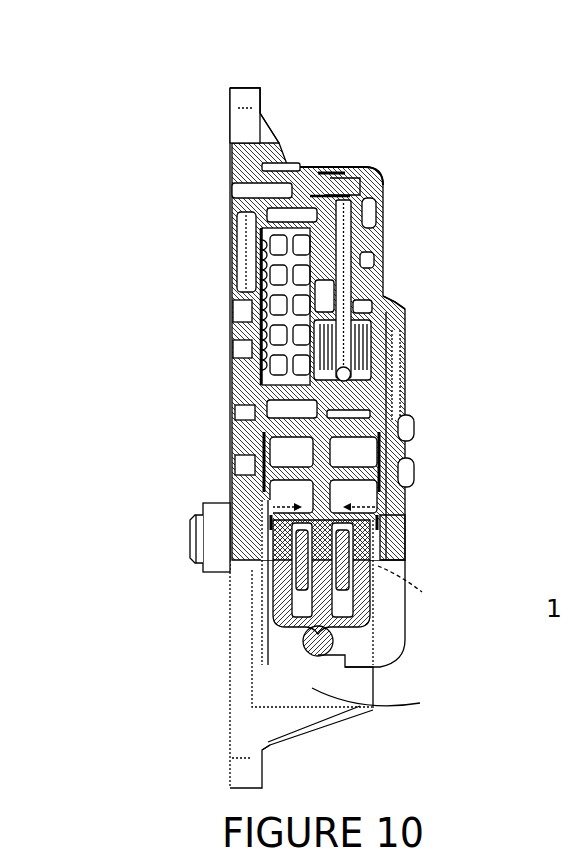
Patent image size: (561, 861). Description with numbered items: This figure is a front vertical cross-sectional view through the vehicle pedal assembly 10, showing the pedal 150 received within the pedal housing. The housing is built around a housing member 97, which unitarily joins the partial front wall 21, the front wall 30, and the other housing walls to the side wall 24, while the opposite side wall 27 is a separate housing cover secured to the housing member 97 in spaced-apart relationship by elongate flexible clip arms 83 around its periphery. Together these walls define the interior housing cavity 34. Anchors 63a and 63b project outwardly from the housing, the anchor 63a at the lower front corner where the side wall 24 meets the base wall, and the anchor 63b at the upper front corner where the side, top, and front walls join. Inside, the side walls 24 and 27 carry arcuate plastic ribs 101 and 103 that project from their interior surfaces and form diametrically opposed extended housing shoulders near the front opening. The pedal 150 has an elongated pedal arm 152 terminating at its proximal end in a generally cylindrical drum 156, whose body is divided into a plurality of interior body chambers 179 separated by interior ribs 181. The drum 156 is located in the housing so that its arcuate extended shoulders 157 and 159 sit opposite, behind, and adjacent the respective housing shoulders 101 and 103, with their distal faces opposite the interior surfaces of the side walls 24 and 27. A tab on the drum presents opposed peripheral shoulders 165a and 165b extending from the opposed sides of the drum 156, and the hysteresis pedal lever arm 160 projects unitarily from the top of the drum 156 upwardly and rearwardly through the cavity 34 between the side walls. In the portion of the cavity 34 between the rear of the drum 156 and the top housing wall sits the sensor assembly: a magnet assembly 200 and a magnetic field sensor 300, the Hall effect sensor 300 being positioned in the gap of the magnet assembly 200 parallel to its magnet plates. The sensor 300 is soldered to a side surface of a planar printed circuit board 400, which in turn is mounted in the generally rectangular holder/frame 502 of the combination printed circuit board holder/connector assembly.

The vehicle pedal assembly 10 is at (474, 184).
The partial front wall 21 is at (373, 703).
The side wall 24 is at (262, 258).
The side wall 27 is at (411, 601).
The front wall 30 is at (305, 165).
The interior housing cavity 34 is at (275, 383).
The anchor 63a is at (228, 760).
The anchor 63b is at (245, 80).
The clip arms 83 is at (333, 180).
The housing member 97 is at (321, 735).
The arcuate wall 101 is at (260, 531).
The arcuate wall 103 is at (382, 532).
The pedal 150 is at (262, 598).
The pedal arm 152 is at (270, 568).
The drum 156 is at (378, 410).
The extended shoulder 157 is at (262, 508).
The extended shoulder 159 is at (376, 518).
The pedal lever arm 160 is at (290, 325).
The peripheral shoulder 165a is at (263, 442).
The peripheral shoulder 165b is at (364, 430).
The interior body chambers 179 is at (362, 455).
The interior ribs 181 is at (412, 468).
The magnet assembly 200 is at (358, 368).
The magnetic field sensor 300 is at (348, 345).
The printed circuit board 400 is at (365, 298).
The holder/frame 502 is at (348, 205).